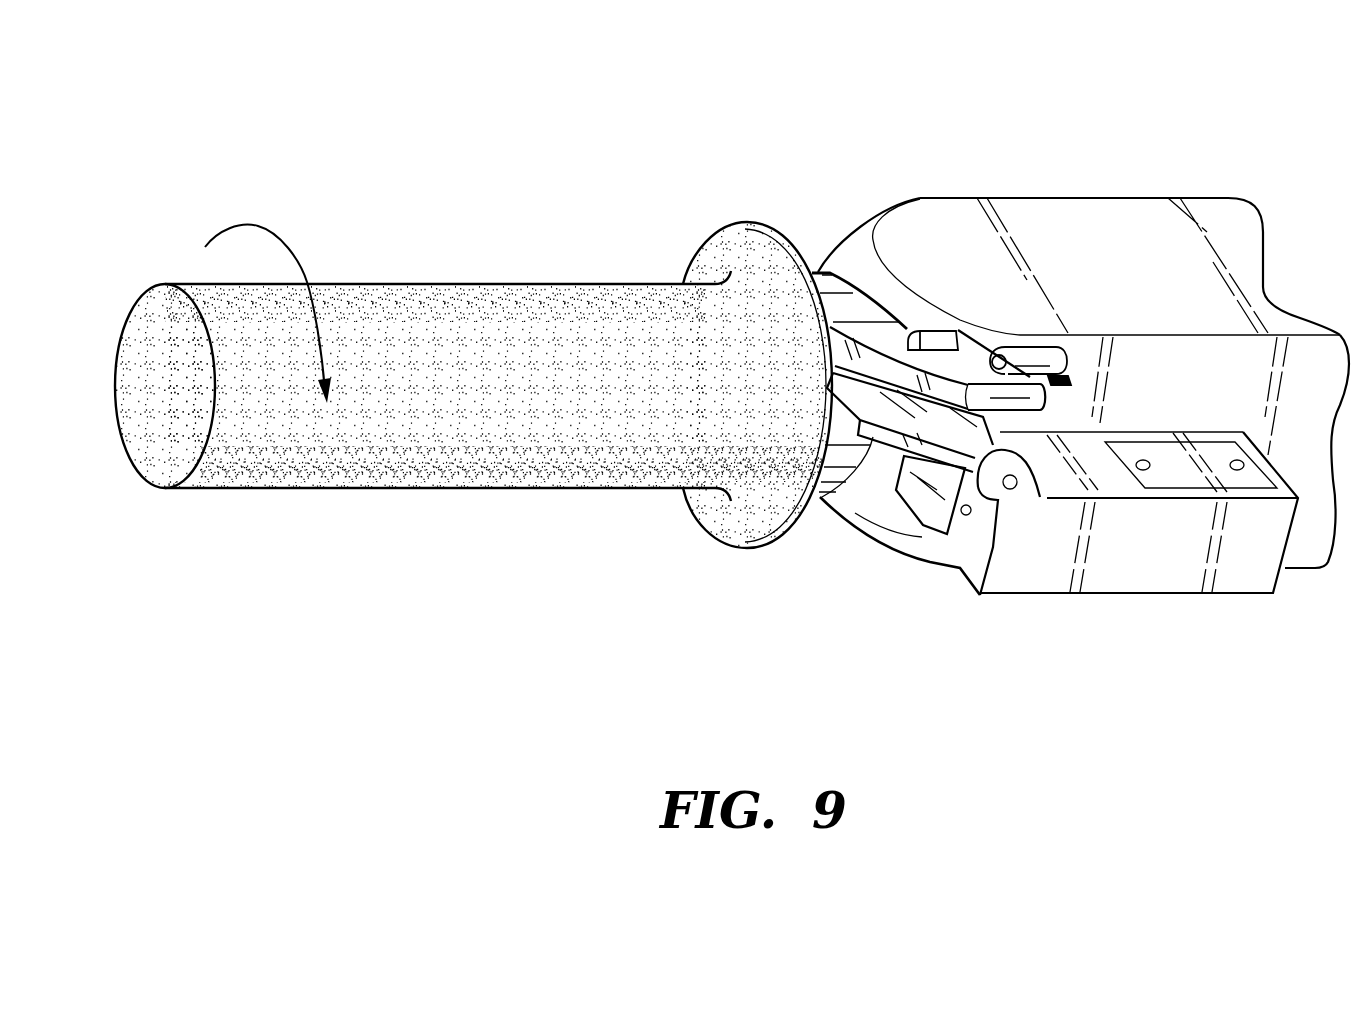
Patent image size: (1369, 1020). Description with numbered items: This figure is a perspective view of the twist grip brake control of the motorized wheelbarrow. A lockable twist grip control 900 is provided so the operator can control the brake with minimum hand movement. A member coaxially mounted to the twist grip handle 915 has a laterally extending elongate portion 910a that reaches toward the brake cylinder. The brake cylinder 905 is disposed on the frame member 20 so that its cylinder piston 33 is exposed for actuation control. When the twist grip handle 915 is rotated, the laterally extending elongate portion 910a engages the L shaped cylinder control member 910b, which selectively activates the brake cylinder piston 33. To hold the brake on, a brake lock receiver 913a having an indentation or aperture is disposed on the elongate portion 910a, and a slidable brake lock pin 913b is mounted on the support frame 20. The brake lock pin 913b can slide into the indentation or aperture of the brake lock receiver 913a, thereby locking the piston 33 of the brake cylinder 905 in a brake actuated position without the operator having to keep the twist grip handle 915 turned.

The lockable twist grip control 900 is at (616, 140).
The twist grip handle 915 is at (500, 292).
The frame member 20 is at (1100, 206).
The laterally extending elongate portion 910a is at (902, 333).
The L shaped cylinder control member 910b is at (922, 508).
The brake lock receiver 913a is at (958, 334).
The slidable brake lock pin 913b is at (1016, 340).
The cylinder piston 33 is at (972, 515).
The brake cylinder 905 is at (1162, 585).